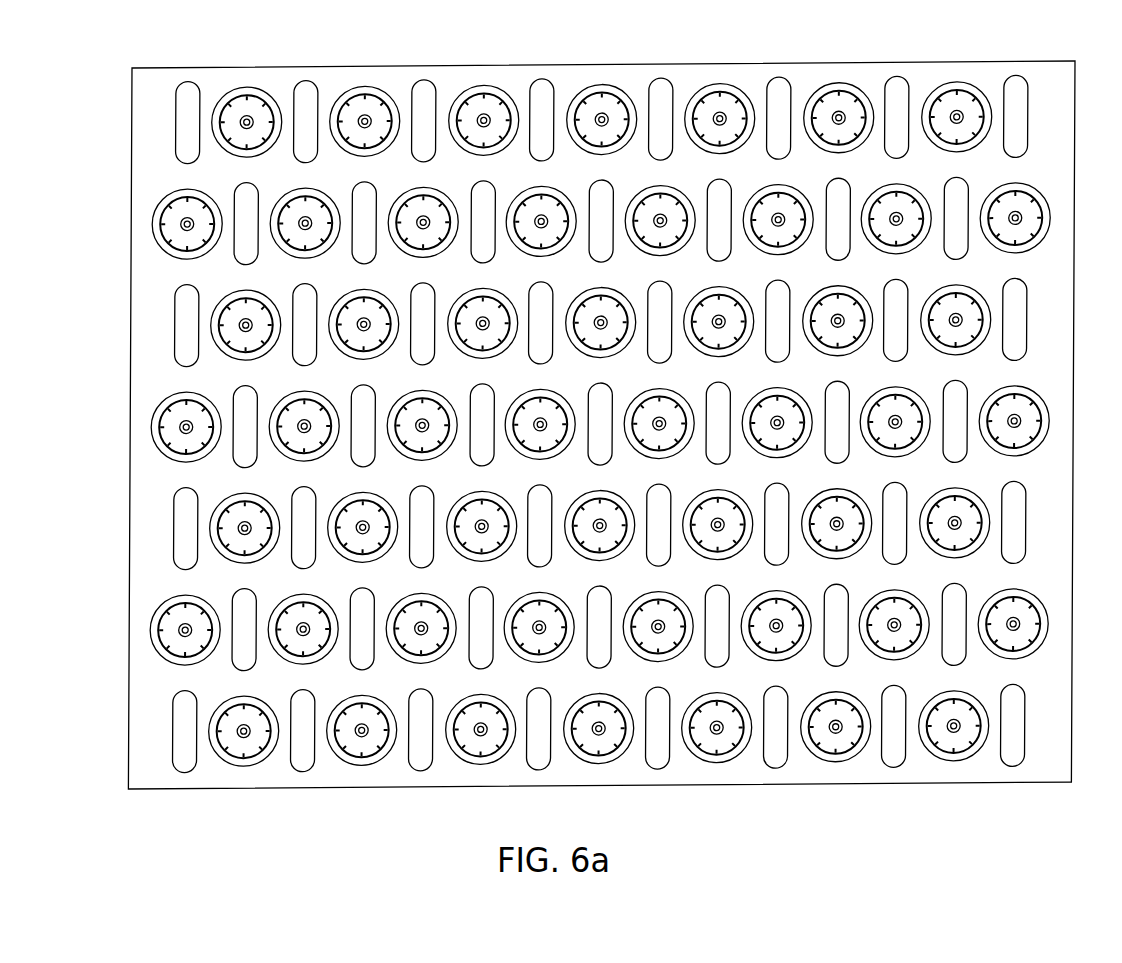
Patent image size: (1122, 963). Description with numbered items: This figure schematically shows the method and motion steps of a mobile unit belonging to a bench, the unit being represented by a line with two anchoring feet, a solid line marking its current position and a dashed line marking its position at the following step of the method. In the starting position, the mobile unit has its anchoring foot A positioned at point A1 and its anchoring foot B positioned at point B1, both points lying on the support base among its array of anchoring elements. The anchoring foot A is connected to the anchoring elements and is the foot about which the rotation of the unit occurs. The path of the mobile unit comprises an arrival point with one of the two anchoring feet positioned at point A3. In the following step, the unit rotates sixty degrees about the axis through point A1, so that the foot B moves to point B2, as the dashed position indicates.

The anchoring foot A is at (369, 121).
The point A1 is at (423, 197).
The point A3 is at (663, 409).
The anchoring foot B is at (487, 120).
The point B1 is at (372, 122).
The point B2 is at (428, 225).